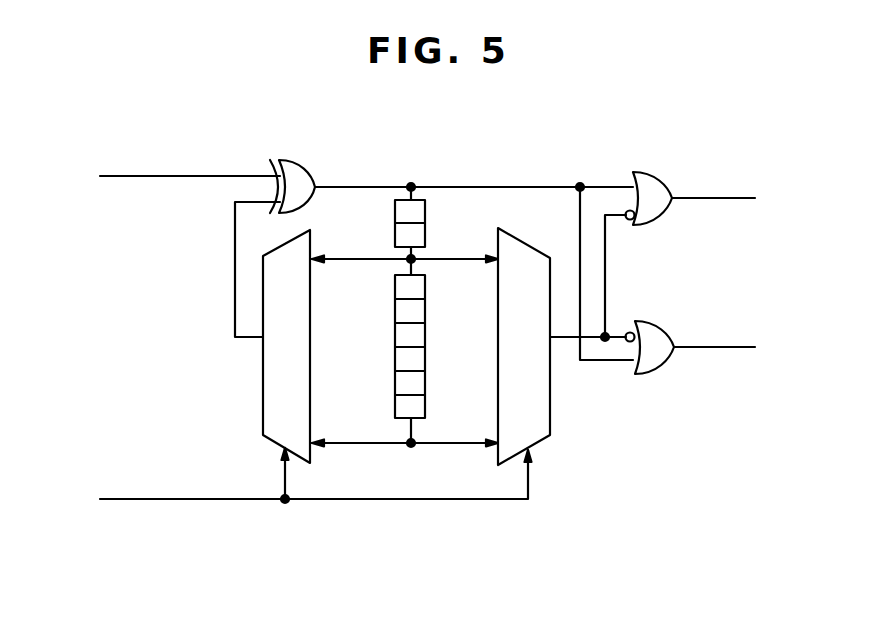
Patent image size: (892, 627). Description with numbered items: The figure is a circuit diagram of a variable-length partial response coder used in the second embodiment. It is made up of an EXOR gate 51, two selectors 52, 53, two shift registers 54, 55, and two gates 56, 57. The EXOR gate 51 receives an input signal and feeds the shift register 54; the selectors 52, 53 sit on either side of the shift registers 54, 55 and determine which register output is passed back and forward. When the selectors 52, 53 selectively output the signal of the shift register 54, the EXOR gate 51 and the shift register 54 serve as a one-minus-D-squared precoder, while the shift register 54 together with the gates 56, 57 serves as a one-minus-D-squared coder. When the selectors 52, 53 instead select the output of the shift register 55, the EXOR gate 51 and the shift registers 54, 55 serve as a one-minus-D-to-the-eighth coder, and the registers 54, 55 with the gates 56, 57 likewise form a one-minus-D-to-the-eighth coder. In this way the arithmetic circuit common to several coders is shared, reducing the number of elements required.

The EXOR gate 51 is at (300, 160).
The selector 52 is at (263, 378).
The selector 53 is at (536, 250).
The shift register 54 is at (431, 218).
The shift register 55 is at (431, 331).
The gate 56 is at (660, 172).
The gate 57 is at (663, 321).